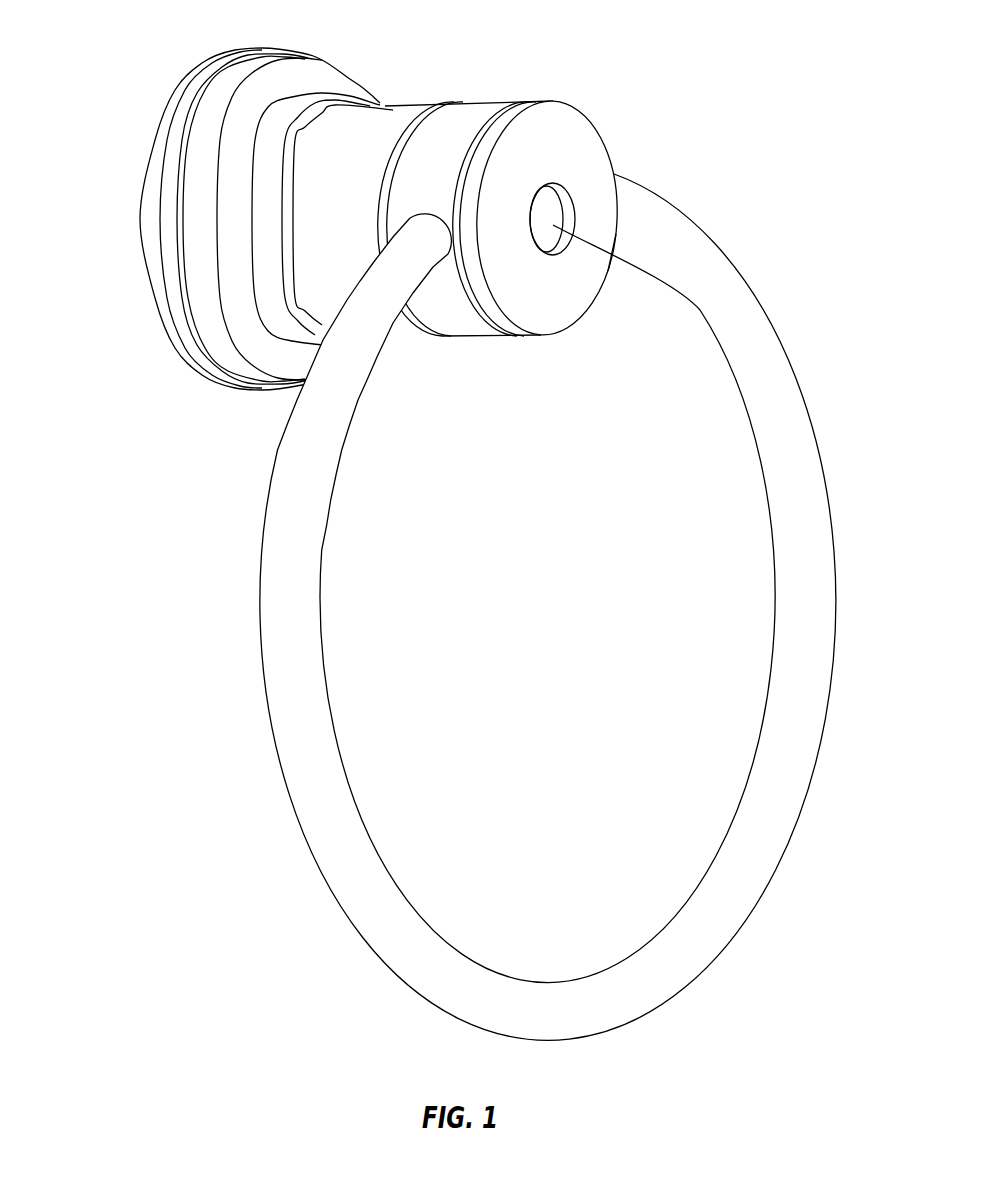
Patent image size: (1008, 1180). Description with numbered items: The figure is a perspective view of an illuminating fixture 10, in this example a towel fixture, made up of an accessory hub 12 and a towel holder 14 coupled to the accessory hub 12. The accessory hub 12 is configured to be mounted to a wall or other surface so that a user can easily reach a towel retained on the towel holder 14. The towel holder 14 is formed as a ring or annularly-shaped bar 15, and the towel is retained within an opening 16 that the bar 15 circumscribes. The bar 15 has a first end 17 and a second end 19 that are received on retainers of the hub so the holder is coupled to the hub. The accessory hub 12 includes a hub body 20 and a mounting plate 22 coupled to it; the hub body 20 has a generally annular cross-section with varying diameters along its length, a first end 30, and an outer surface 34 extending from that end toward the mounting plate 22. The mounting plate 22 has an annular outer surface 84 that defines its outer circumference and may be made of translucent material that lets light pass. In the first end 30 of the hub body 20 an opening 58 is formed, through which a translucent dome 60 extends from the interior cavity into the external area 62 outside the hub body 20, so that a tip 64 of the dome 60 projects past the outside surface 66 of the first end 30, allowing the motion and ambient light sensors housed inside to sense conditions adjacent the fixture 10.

The illuminating fixture 10 is at (463, 539).
The accessory hub 12 is at (463, 539).
The towel holder 14 is at (574, 607).
The bar 15 is at (815, 498).
The opening 16 is at (660, 714).
The first end 17 is at (403, 270).
The second end 19 is at (627, 225).
The hub body 20 is at (544, 222).
The mounting plate 22 is at (152, 213).
The first end 30 is at (587, 147).
The outer surface 34 is at (327, 250).
The opening 58 is at (620, 198).
The dome 60 is at (613, 258).
The external area 62 is at (215, 225).
The tip 64 is at (553, 211).
The outside surface 66 is at (557, 307).
The annular outer surface 84 is at (162, 300).